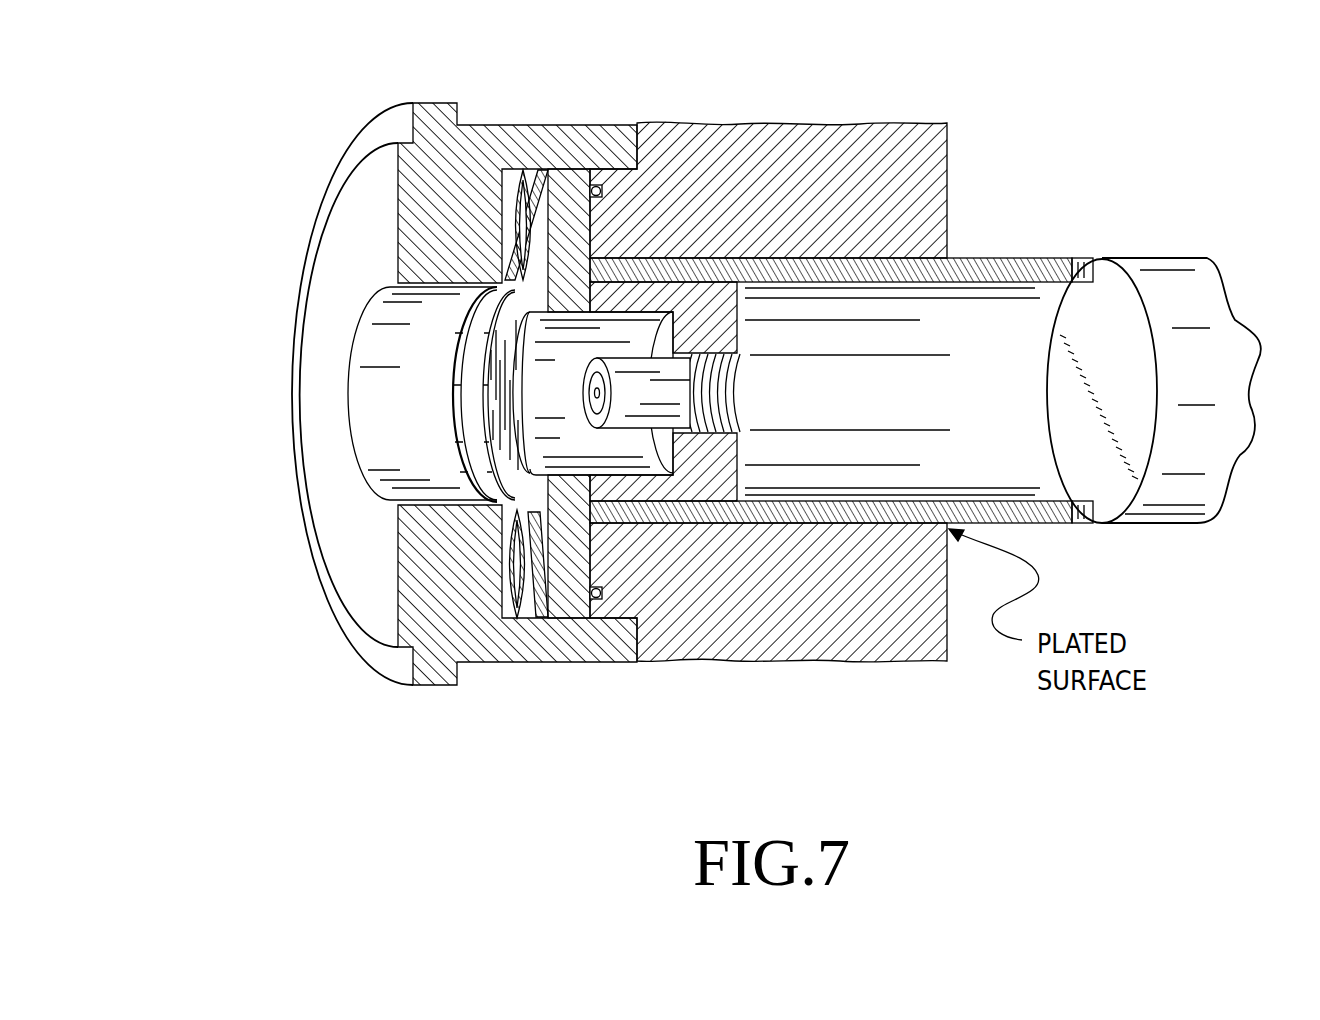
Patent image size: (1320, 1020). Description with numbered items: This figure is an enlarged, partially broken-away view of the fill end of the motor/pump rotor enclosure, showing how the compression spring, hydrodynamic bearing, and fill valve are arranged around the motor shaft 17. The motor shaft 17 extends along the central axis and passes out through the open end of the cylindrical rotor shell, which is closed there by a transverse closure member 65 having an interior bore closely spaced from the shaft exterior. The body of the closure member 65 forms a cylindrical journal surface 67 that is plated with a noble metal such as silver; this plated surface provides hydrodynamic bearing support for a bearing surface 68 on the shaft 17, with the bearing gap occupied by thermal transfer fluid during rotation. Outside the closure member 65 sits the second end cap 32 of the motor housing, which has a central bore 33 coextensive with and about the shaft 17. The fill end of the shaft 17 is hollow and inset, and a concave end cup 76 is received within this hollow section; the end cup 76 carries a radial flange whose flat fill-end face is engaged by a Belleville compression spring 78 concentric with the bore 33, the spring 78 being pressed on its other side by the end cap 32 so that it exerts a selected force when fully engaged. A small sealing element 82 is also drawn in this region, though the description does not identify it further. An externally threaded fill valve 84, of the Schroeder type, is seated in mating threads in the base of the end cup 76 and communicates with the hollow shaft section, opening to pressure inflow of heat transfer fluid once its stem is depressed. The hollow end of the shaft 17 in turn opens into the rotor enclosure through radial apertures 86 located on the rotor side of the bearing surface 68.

The motor shaft 17 is at (1185, 508).
The second end cap 32 is at (347, 237).
The central bore 33 is at (373, 439).
The closure member 65 is at (815, 142).
The cylindrical journal surface 67 is at (878, 522).
The bearing surface 68 is at (897, 267).
The concave end cup 76 is at (676, 483).
The compression spring 78 is at (535, 600).
The O-ring seal 82 is at (593, 598).
The fill valve 84 is at (637, 407).
The radial apertures 86 is at (1088, 524).